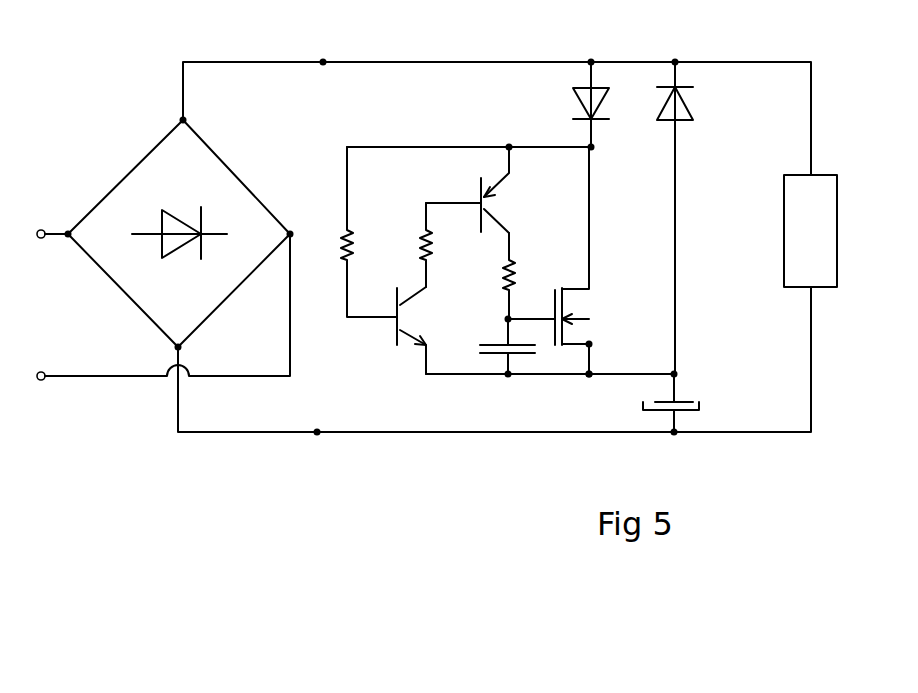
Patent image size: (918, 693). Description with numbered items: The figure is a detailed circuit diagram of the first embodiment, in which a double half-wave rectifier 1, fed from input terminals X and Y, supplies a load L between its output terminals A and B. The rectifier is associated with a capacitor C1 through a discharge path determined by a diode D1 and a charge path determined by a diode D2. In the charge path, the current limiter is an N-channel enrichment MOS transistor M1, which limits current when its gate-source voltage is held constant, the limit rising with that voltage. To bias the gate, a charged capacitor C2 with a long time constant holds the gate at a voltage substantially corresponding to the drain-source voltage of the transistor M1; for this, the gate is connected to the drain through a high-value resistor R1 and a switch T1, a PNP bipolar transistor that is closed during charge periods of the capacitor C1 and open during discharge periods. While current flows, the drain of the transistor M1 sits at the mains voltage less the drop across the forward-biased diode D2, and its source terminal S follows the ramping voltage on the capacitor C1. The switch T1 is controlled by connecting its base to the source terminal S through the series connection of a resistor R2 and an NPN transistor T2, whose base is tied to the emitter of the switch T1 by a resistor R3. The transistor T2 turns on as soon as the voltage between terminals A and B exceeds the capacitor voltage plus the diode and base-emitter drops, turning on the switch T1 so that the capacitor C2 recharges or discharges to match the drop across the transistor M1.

The double half-wave rectifier 1 is at (131, 171).
The input terminal X is at (47, 222).
The input terminal Y is at (158, 307).
The terminal A is at (320, 49).
The terminal B is at (315, 448).
The diode D2 is at (565, 104).
The diode D1 is at (692, 218).
The load L is at (838, 224).
The resistor R3 is at (369, 232).
The resistor R2 is at (442, 245).
The resistor R1 is at (524, 276).
The switch T1 is at (480, 190).
The NPN transistor T2 is at (423, 330).
The capacitor C2 is at (501, 346).
The N-channel enrichment MOS transistor M1 is at (582, 304).
The source terminal S is at (589, 375).
The capacitor C1 is at (692, 403).